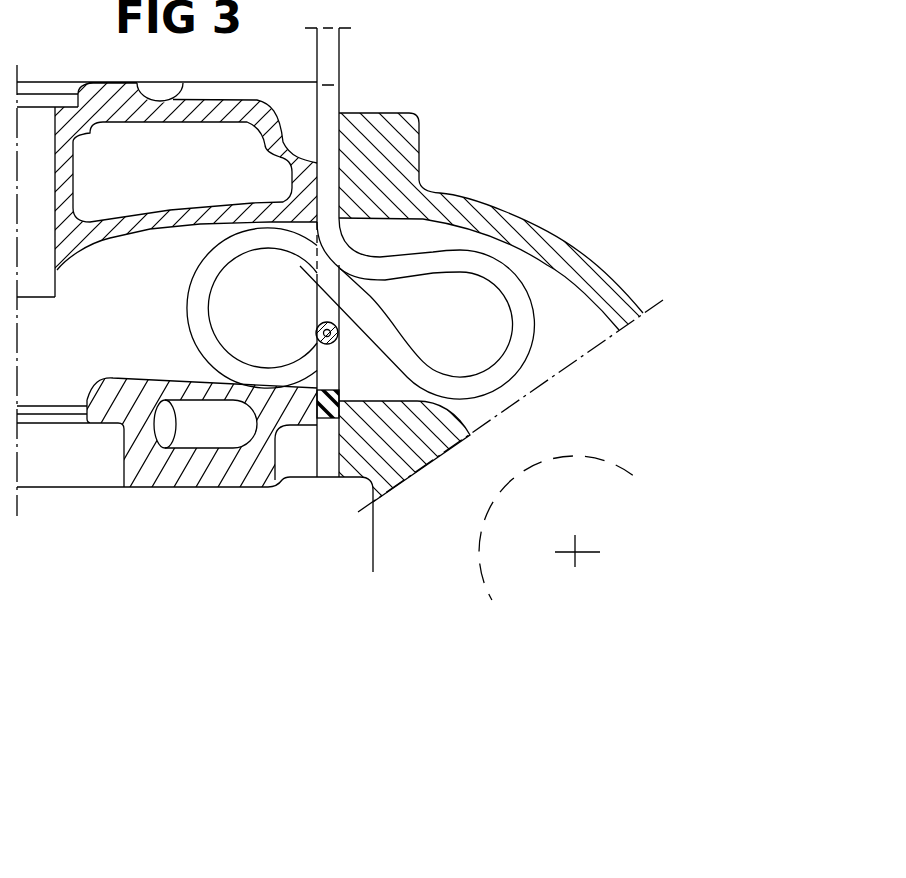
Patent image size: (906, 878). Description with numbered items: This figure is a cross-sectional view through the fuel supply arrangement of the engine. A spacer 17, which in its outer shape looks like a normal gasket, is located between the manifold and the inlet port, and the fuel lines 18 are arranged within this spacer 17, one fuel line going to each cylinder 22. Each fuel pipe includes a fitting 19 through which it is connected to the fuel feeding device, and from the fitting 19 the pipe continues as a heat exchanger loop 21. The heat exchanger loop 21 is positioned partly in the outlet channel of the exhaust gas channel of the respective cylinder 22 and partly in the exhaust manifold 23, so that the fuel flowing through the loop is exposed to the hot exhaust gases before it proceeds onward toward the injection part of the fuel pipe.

The spacer 17 is at (330, 421).
The fuel lines 18 is at (392, 252).
The fitting 19 is at (330, 65).
The heat exchanger loop 21 is at (437, 263).
The cylinder 22 is at (224, 308).
The exhaust manifold 23 is at (417, 324).